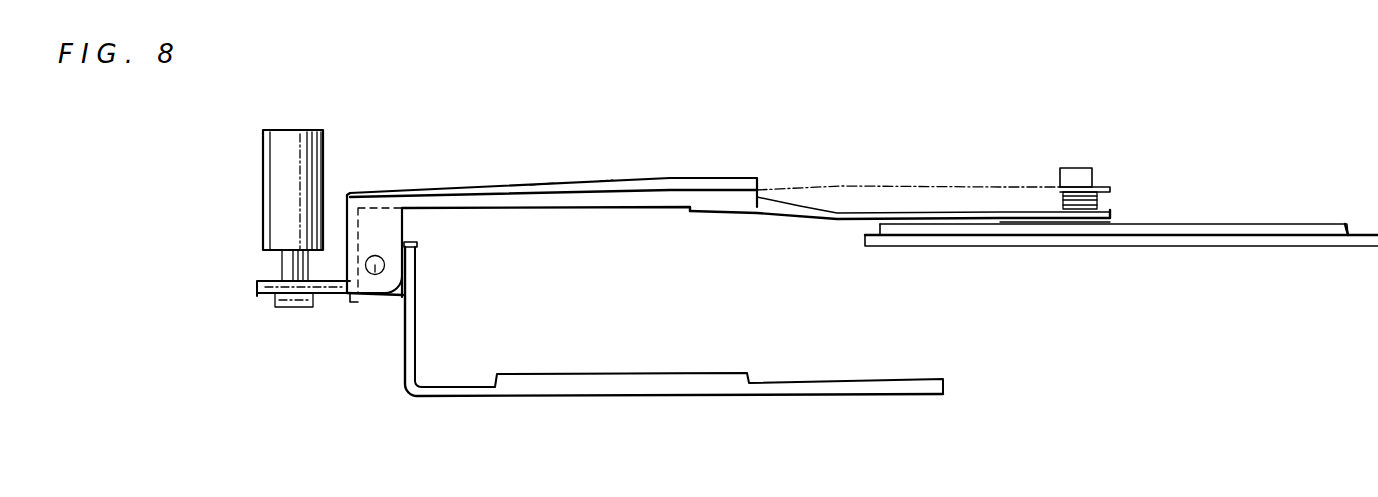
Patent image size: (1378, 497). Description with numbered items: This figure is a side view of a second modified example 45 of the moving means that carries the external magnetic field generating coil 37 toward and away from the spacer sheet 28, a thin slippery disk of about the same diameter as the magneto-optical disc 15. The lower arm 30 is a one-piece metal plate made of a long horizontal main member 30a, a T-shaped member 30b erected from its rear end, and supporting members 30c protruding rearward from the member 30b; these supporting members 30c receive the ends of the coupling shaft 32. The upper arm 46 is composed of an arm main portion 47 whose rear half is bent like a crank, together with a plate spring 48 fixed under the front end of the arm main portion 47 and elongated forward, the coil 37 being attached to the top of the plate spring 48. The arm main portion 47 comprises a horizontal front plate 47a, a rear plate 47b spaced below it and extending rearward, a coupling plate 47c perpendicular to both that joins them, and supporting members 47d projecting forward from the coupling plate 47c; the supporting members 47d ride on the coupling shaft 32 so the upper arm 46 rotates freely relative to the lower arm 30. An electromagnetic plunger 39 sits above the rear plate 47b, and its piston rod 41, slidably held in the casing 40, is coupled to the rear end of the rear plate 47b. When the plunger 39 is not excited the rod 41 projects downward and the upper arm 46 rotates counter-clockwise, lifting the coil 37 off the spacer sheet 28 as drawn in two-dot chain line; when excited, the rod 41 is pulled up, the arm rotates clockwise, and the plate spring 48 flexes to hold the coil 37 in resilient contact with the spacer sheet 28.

The magneto-optical disc 15 is at (1355, 248).
The spacer sheet 28 is at (1345, 223).
The lower arm 30 is at (551, 398).
The main member 30a is at (679, 385).
The member of substantially T-letter configuration 30b is at (418, 348).
The supporting member 30c is at (393, 300).
The coupling shaft 32 is at (375, 272).
The external magnetic field generating coil 37 is at (1090, 168).
The electromagnetic plunger 39 is at (263, 212).
The casing 40 is at (303, 130).
The piston rod 41 is at (280, 267).
The second modified example of the moving means 45 is at (506, 175).
The upper arm 46 is at (670, 178).
The arm main portion 47 is at (745, 177).
The front plate 47a is at (612, 180).
The rear plate 47b is at (257, 287).
The coupling plate 47c is at (343, 193).
The supporting member 47d is at (393, 225).
The plate spring 48 is at (900, 194).